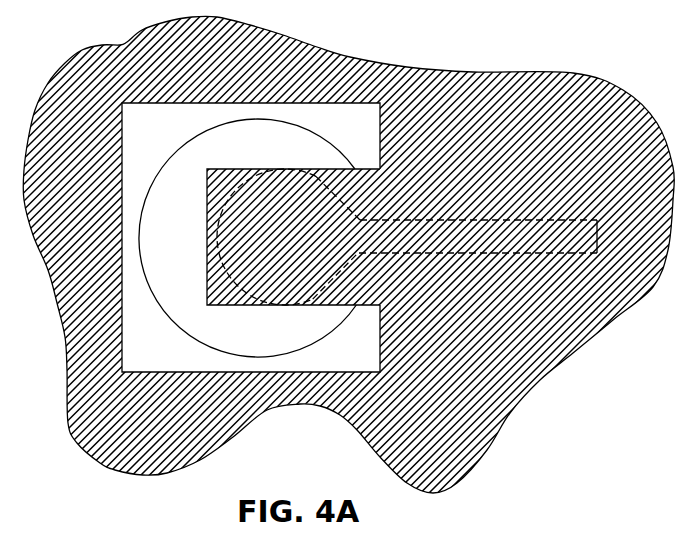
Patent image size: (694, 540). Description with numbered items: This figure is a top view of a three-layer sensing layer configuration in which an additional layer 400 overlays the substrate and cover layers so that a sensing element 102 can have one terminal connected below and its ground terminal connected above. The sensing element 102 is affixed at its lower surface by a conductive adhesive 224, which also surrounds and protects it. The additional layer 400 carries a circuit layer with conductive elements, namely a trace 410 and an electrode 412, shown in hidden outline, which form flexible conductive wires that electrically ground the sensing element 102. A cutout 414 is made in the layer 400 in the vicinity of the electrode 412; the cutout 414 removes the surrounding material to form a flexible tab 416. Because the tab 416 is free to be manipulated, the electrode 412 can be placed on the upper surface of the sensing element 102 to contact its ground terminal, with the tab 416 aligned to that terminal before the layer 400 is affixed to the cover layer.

The additional layer 400 is at (573, 445).
The sensing element 102 is at (247, 238).
The conductive adhesive 224 is at (251, 237).
The electrode 412 is at (347, 270).
The trace 410 is at (477, 236).
The cutout 414 is at (251, 237).
The flexible tab 416 is at (308, 237).